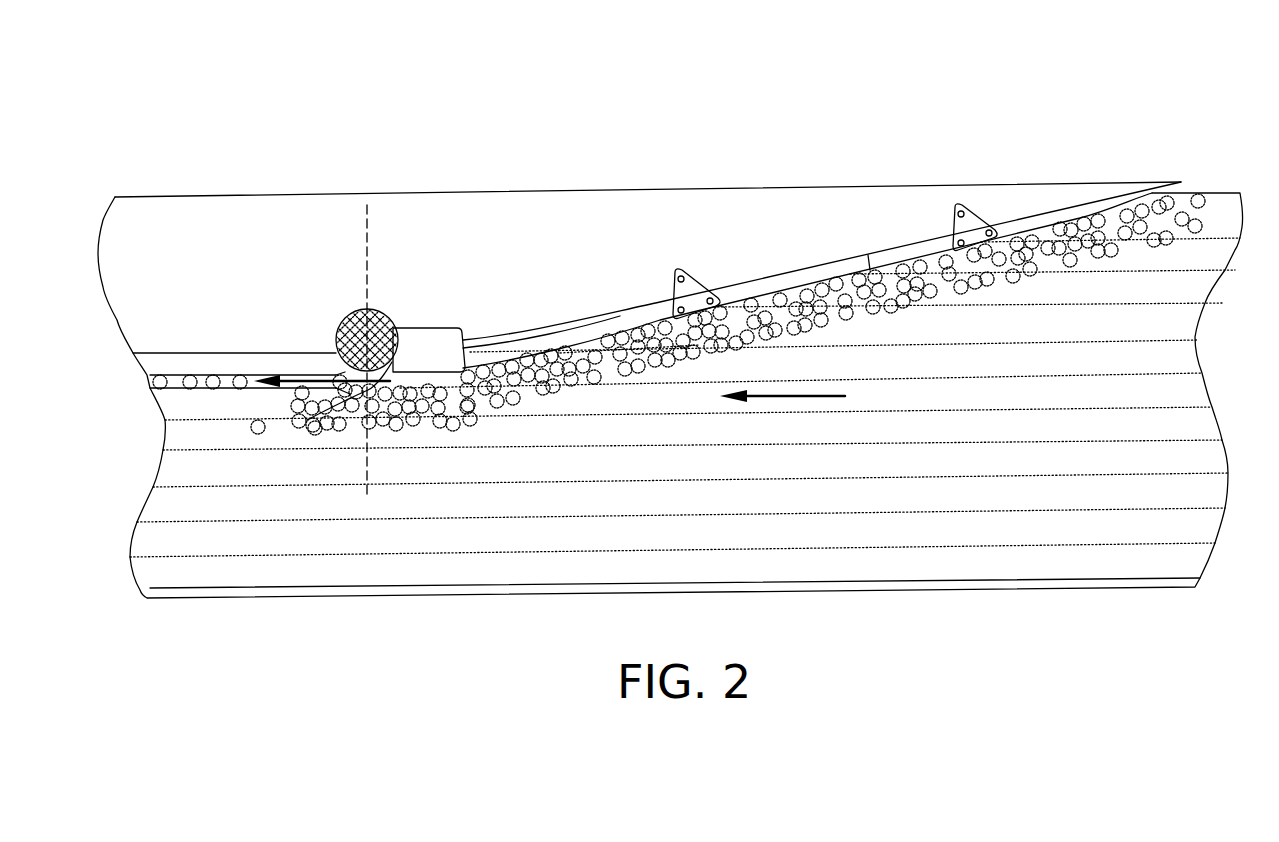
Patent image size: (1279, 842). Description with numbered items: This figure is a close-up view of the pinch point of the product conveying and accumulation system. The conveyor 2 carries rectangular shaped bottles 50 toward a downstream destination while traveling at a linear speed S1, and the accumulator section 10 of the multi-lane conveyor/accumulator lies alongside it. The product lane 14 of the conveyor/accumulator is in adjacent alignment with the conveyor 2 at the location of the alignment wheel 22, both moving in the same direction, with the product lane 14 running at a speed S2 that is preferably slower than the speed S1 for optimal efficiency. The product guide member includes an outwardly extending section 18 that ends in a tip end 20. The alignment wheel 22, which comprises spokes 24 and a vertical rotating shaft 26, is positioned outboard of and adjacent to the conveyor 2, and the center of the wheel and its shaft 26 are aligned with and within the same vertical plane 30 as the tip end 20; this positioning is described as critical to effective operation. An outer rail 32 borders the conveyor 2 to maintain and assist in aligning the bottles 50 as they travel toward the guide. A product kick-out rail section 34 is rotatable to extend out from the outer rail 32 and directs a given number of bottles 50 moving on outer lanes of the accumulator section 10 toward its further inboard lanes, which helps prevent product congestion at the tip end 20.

The conveyor 2 is at (205, 376).
The accumulator section 10 is at (1140, 418).
The product lane 14 is at (593, 398).
The outwardly extending section 18 is at (293, 400).
The tip end 20 is at (368, 397).
The alignment wheel 22 is at (402, 327).
The spokes 24 is at (373, 330).
The vertical rotating shaft 26 is at (353, 333).
The vertical plane 30 is at (370, 263).
The outer rail 32 is at (773, 277).
The product kick-out rail section 34 is at (903, 257).
The bottles 50 is at (533, 412).
The linear speed of conveyor S1 is at (307, 377).
The speed of product lane S2 is at (810, 392).